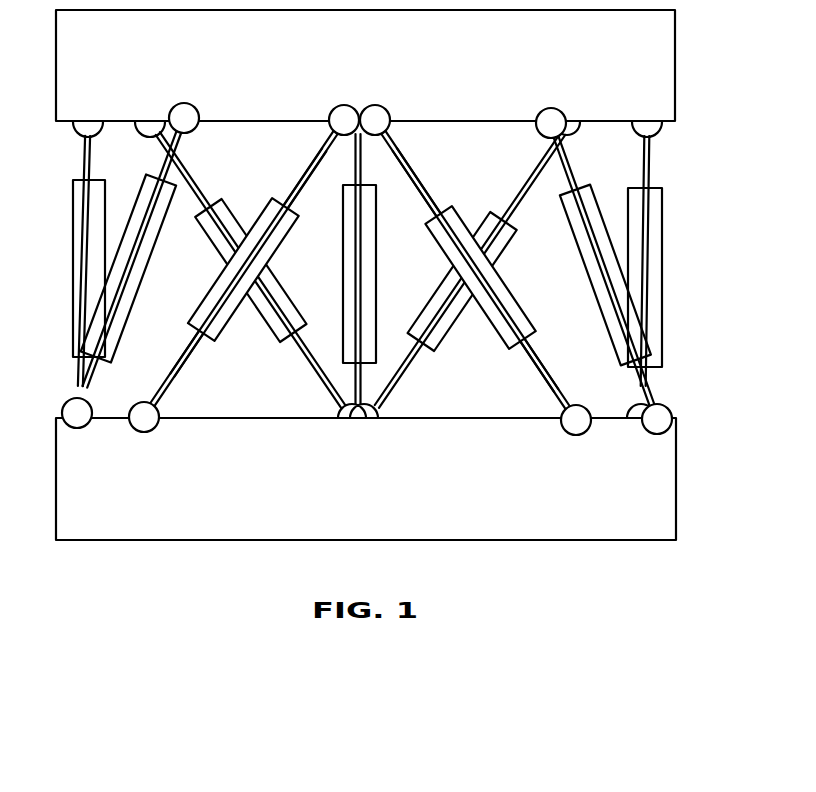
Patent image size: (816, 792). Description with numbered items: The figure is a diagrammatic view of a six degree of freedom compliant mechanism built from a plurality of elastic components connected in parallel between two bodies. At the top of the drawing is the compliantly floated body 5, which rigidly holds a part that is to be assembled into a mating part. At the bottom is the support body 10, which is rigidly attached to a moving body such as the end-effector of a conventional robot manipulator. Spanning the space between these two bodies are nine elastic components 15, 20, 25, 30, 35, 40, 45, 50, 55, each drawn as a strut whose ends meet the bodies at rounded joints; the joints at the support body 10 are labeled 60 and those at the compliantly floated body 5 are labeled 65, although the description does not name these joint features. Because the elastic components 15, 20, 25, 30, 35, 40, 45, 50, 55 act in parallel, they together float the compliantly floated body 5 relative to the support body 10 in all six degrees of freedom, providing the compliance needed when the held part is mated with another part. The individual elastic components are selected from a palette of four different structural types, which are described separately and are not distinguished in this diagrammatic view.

The compliantly floated body 5 is at (284, 76).
The support body 10 is at (283, 496).
The elastic component 15 is at (73, 266).
The elastic component 20 is at (156, 246).
The elastic component 25 is at (240, 212).
The elastic component 30 is at (237, 320).
The elastic component 35 is at (343, 223).
The elastic component 40 is at (460, 217).
The elastic component 45 is at (457, 330).
The elastic component 50 is at (582, 260).
The elastic component 55 is at (663, 248).
The lower joints 60 is at (63, 430).
The upper joints 65 is at (173, 100).